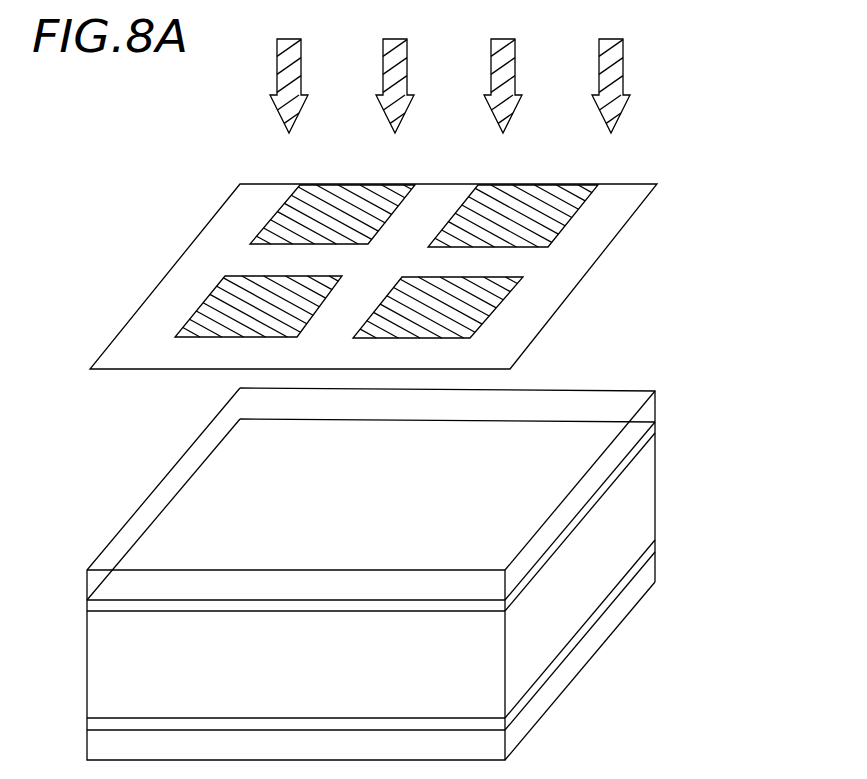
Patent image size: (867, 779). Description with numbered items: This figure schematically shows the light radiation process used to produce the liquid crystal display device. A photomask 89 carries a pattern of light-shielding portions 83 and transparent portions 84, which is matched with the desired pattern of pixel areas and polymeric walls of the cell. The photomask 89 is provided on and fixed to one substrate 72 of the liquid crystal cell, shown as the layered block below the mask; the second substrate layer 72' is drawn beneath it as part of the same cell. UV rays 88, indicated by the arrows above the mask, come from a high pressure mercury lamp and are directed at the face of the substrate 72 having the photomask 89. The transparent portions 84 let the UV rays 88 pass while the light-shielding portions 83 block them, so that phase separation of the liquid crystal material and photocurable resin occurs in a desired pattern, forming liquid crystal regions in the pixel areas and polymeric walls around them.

The UV rays 88 is at (620, 62).
The light-shielding portions 83 is at (571, 185).
The transparent portions 84 is at (607, 227).
The photomask 89 is at (140, 268).
The substrate 72 is at (413, 571).
The second substrate layer 72' is at (417, 650).